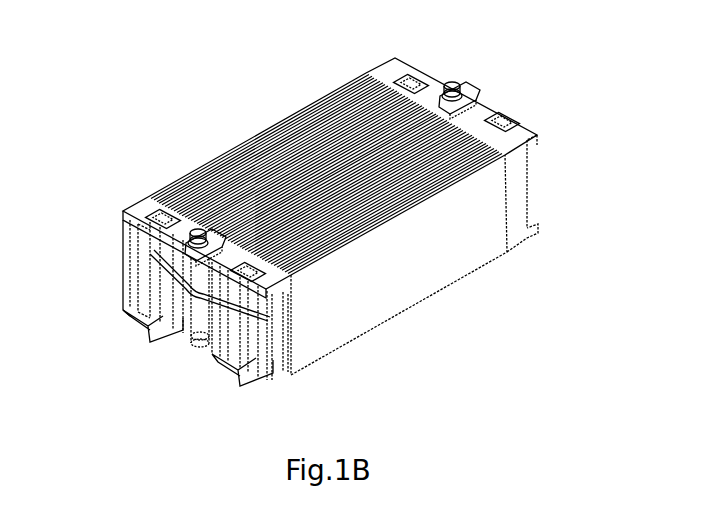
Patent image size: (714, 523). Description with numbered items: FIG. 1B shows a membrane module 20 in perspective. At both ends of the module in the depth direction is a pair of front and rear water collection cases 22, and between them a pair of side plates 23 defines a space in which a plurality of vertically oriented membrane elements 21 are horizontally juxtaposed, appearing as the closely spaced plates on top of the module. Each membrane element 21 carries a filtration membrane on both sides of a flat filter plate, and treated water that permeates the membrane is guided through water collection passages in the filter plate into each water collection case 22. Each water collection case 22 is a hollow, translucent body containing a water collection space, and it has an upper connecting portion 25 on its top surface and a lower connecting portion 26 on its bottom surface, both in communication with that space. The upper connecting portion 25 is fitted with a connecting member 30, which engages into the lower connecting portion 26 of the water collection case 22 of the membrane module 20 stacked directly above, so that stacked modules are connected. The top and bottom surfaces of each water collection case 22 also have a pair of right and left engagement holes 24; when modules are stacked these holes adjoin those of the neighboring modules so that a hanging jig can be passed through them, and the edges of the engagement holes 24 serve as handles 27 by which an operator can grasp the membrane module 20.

The membrane module 20 is at (226, 118).
The membrane element 21 is at (310, 115).
The water collection case 22 is at (387, 67).
The side plate 23 is at (450, 258).
The engagement hole 24 is at (408, 75).
The upper connecting portion 25 is at (462, 98).
The lower connecting portion 26 is at (195, 343).
The handle 27 is at (153, 317).
The connecting member 30 is at (455, 83).